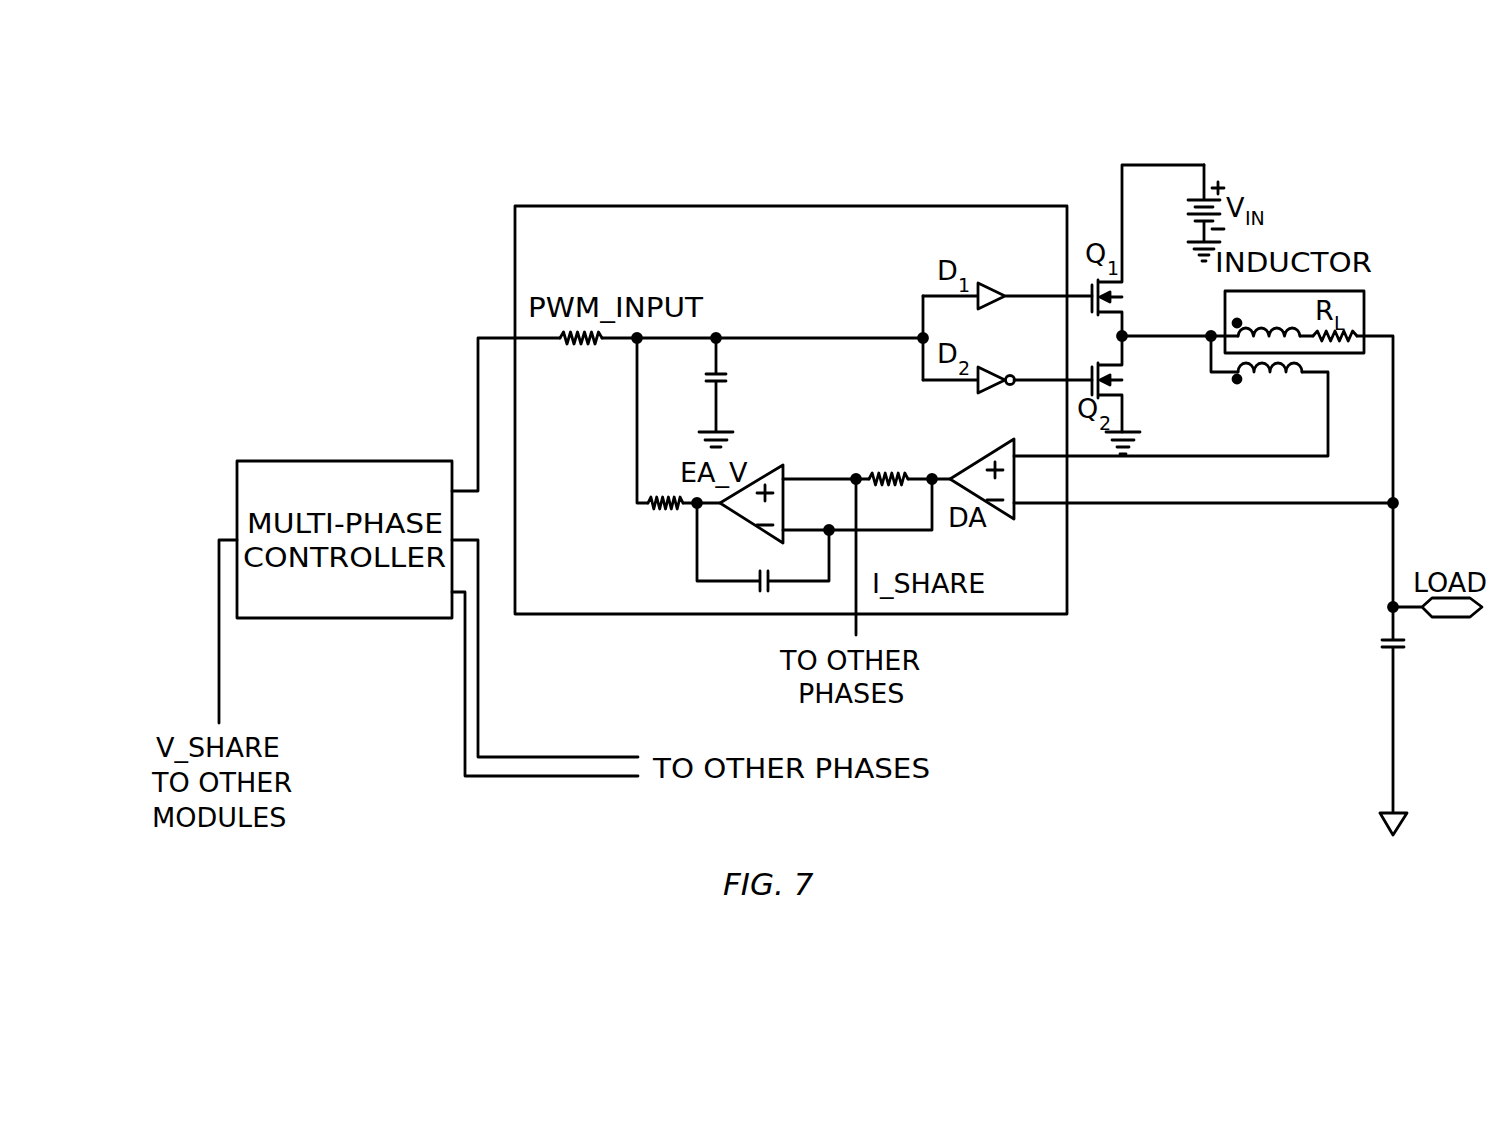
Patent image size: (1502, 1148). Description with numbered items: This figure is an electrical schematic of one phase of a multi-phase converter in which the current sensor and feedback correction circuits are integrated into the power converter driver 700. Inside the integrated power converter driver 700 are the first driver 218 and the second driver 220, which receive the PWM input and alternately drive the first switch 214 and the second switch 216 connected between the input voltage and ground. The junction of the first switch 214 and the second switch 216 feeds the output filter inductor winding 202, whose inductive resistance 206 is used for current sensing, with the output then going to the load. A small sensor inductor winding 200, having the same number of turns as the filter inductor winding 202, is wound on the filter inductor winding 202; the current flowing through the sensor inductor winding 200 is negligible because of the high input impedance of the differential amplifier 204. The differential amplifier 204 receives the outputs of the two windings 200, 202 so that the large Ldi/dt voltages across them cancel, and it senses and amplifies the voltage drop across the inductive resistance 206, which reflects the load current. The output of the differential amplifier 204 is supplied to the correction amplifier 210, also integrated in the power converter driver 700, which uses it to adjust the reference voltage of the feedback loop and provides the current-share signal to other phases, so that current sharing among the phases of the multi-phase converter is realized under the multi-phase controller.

The power converter driver 700 is at (492, 242).
The driver D1 218 is at (992, 283).
The driver D2 220 is at (982, 370).
The correction amplifier 210 is at (758, 472).
The differential amplifier 204 is at (987, 455).
The switch Q1 214 is at (1126, 292).
The switch Q2 216 is at (1126, 378).
The output filter inductor winding 202 is at (1258, 326).
The inductive resistance R_L 206 is at (1350, 333).
The sensor inductor winding 200 is at (1240, 384).